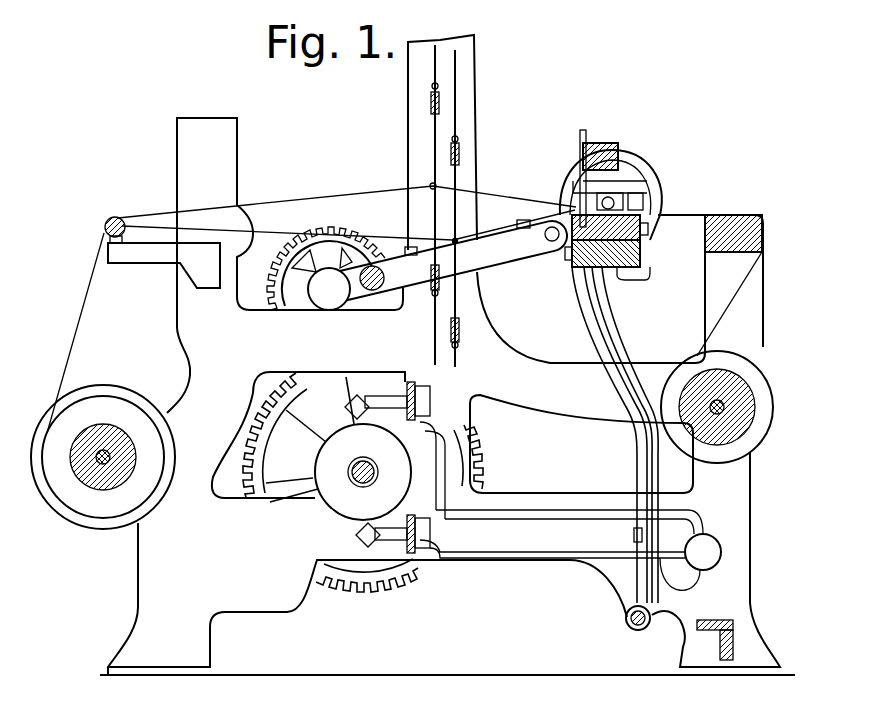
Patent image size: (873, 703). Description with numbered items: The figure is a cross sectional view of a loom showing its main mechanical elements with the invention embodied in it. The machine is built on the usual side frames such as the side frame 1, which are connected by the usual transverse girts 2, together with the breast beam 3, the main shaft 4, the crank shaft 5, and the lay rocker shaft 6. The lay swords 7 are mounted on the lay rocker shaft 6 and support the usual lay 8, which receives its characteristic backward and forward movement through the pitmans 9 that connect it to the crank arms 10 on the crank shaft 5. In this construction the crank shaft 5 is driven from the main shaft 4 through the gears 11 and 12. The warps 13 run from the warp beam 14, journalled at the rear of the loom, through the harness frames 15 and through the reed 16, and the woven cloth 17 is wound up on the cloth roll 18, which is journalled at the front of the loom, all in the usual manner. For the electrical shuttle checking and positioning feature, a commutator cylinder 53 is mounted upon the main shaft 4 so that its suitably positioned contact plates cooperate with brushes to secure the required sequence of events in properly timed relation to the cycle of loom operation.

The side frame 1 is at (753, 297).
The transverse girt 2 is at (153, 253).
The breast beam 3 is at (740, 217).
The main shaft 4 is at (375, 472).
The crank shaft 5 is at (322, 293).
The lay rocker shaft 6 is at (627, 620).
The lay sword 7 is at (632, 438).
The lay 8 is at (584, 252).
The pitman 9 is at (488, 252).
The crank arm 10 is at (353, 276).
The gear 11 is at (267, 272).
The gear 12 is at (240, 470).
The warps 13 is at (83, 305).
The warp beam 14 is at (105, 428).
The harness frame 15 is at (431, 103).
The reed 16 is at (596, 170).
The woven cloth 17 is at (718, 322).
The cloth roll 18 is at (719, 406).
The commutator cylinder 53 is at (333, 498).